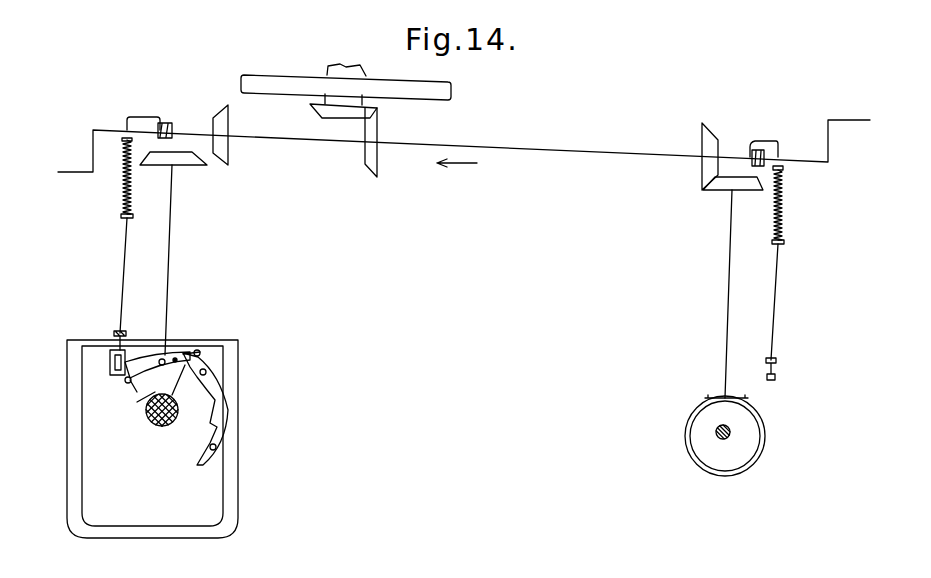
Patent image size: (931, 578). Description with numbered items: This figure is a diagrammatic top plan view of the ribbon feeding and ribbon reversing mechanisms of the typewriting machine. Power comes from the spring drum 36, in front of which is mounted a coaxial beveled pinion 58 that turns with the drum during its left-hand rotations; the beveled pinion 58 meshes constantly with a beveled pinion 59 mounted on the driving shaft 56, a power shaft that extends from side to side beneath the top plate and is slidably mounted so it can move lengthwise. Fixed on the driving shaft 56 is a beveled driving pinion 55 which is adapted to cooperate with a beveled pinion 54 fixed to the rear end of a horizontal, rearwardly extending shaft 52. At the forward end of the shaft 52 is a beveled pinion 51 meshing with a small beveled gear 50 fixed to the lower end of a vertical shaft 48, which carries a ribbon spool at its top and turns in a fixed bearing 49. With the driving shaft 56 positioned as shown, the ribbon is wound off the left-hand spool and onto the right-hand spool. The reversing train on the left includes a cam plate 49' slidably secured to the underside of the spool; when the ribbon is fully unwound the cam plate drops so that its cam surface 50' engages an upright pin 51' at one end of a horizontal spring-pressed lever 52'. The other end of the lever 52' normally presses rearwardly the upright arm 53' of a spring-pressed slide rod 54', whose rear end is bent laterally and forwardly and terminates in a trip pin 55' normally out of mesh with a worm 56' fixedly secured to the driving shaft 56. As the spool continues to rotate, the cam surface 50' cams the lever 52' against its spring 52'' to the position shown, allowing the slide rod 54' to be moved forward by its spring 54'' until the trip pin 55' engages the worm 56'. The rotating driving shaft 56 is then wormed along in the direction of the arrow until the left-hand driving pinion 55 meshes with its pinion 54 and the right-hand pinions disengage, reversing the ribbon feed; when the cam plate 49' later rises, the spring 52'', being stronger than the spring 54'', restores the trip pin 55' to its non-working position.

The spring drum 36 is at (451, 92).
The vertical shaft 48 is at (160, 425).
The fixed bearing 49 is at (185, 381).
The cam plate 49' is at (230, 409).
The beveled gear 50 is at (725, 447).
The cam surface 50' is at (203, 342).
The beveled pinion 51 is at (729, 384).
The upright pin 51' is at (227, 354).
The horizontal shaft 52 is at (463, 281).
The horizontal spring-pressed lever 52' is at (157, 362).
The spring 52'' is at (125, 398).
The upright arm 53' is at (461, 353).
The beveled pinion 54 is at (451, 184).
The slide rod 54' is at (449, 289).
The spring 54'' is at (471, 191).
The beveled driving pinion 55 is at (475, 146).
The trip pin 55' is at (454, 126).
The driving shaft 56 is at (464, 146).
The worm 56' is at (486, 140).
The beveled pinion 58 is at (377, 109).
The beveled pinion 59 is at (377, 160).